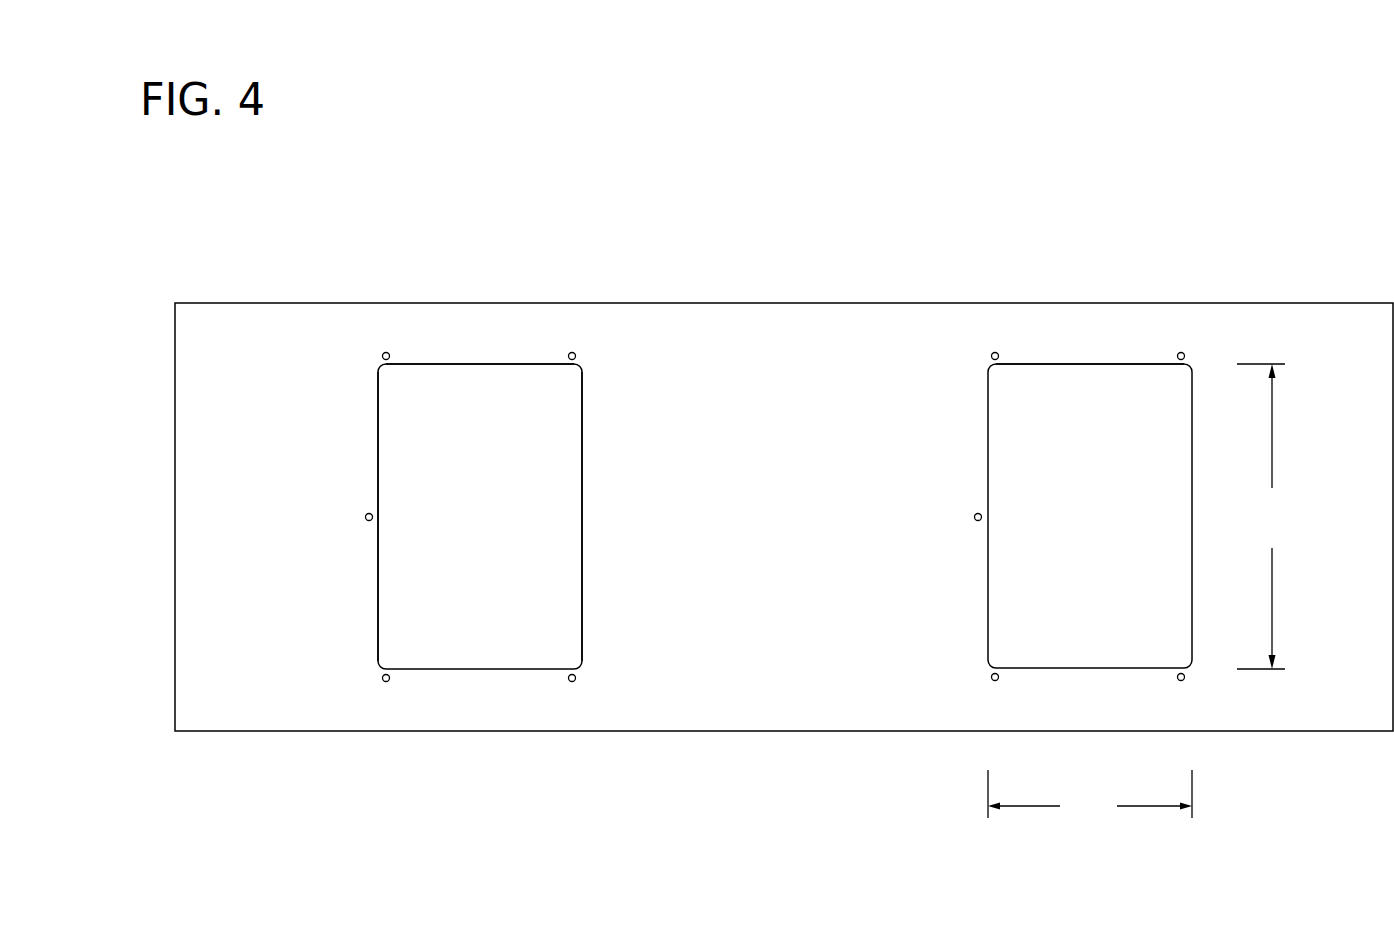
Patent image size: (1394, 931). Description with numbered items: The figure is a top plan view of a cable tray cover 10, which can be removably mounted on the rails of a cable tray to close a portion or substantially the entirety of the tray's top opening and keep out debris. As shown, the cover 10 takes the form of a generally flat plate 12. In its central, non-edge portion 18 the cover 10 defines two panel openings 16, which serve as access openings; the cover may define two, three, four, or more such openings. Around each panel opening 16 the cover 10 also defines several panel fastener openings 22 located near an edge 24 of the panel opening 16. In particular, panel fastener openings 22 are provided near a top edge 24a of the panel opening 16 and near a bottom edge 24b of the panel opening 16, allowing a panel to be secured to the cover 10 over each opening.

The cable tray cover 10 is at (886, 190).
The generally flat plate 12 is at (917, 340).
The panel opening 16 is at (488, 592).
The central portion 18 is at (786, 410).
The panel fastener opening 22 is at (385, 353).
The edge of the panel opening 24 is at (520, 363).
The top edge of the panel opening 24a is at (378, 592).
The bottom edge of the panel opening 24b is at (583, 517).